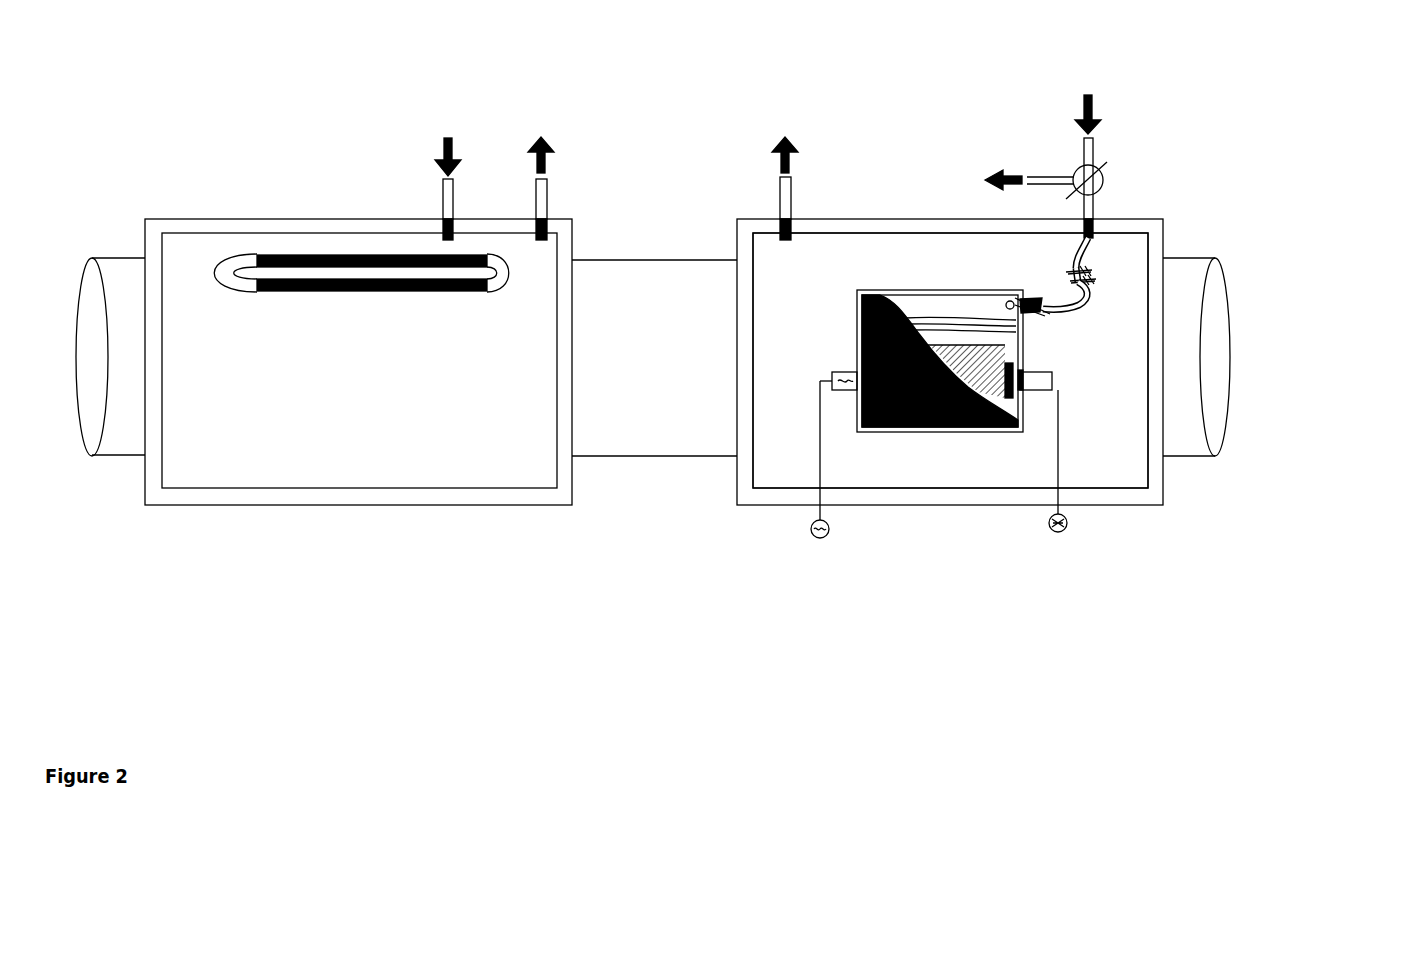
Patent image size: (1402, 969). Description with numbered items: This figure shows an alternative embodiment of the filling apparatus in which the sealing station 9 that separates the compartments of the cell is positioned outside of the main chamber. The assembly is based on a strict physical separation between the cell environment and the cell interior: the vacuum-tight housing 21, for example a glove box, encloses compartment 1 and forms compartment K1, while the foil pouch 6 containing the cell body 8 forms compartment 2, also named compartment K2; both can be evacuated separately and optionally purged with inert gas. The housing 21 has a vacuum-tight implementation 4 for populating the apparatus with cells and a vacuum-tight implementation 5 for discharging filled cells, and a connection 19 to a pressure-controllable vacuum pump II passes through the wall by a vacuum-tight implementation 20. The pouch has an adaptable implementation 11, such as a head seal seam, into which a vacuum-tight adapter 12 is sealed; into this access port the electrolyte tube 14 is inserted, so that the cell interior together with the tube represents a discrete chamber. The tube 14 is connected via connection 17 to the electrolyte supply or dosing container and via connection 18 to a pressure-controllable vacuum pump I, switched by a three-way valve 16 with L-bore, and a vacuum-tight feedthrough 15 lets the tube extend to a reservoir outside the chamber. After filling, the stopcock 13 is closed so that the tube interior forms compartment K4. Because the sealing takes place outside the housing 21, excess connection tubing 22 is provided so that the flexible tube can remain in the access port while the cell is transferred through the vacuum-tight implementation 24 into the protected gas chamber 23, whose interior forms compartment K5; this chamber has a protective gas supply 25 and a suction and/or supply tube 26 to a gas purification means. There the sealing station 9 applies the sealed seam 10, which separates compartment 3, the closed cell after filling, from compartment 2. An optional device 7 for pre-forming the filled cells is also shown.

The compartment 1 is at (782, 460).
The compartment 2 is at (978, 309).
The compartment 3 is at (1053, 373).
The vacuum-tight implementation for populating 4 is at (1090, 360).
The vacuum-tight implementation for discharging 5 is at (121, 308).
The foil pouch 6 is at (957, 432).
The device for pre-forming filled cells 7 is at (1062, 383).
The cell body 8 is at (1016, 366).
The sealing station 9 is at (286, 256).
The seal seam 10 is at (948, 318).
The adaptable implementation 11 is at (1006, 303).
The vacuum-tight adapter 12 is at (1183, 348).
The stopcock 13 is at (1046, 310).
The electrolyte tube 14 is at (1180, 233).
The vacuum-tight feedthrough 15 is at (1094, 246).
The three-way valve 16 is at (1104, 190).
The connection to electrolyte supply 17 is at (1083, 132).
The connection to vacuum pump I 18 is at (985, 180).
The connection to vacuum pump II 19 is at (783, 137).
The vacuum-tight implementation 20 is at (779, 214).
The vacuum-tight housing 21 is at (1138, 498).
The excess connection tubing 22 is at (1080, 296).
The protected gas compartment chamber 23 is at (204, 308).
The vacuum-tight passage 24 is at (655, 307).
The protective gas supply 25 is at (444, 139).
The suction and/or supply tube to the gas purification means 26 is at (540, 138).
The compartment K1 is at (950, 360).
The compartment K2 is at (940, 361).
The compartment K4 is at (1080, 272).
The compartment K5 is at (359, 360).